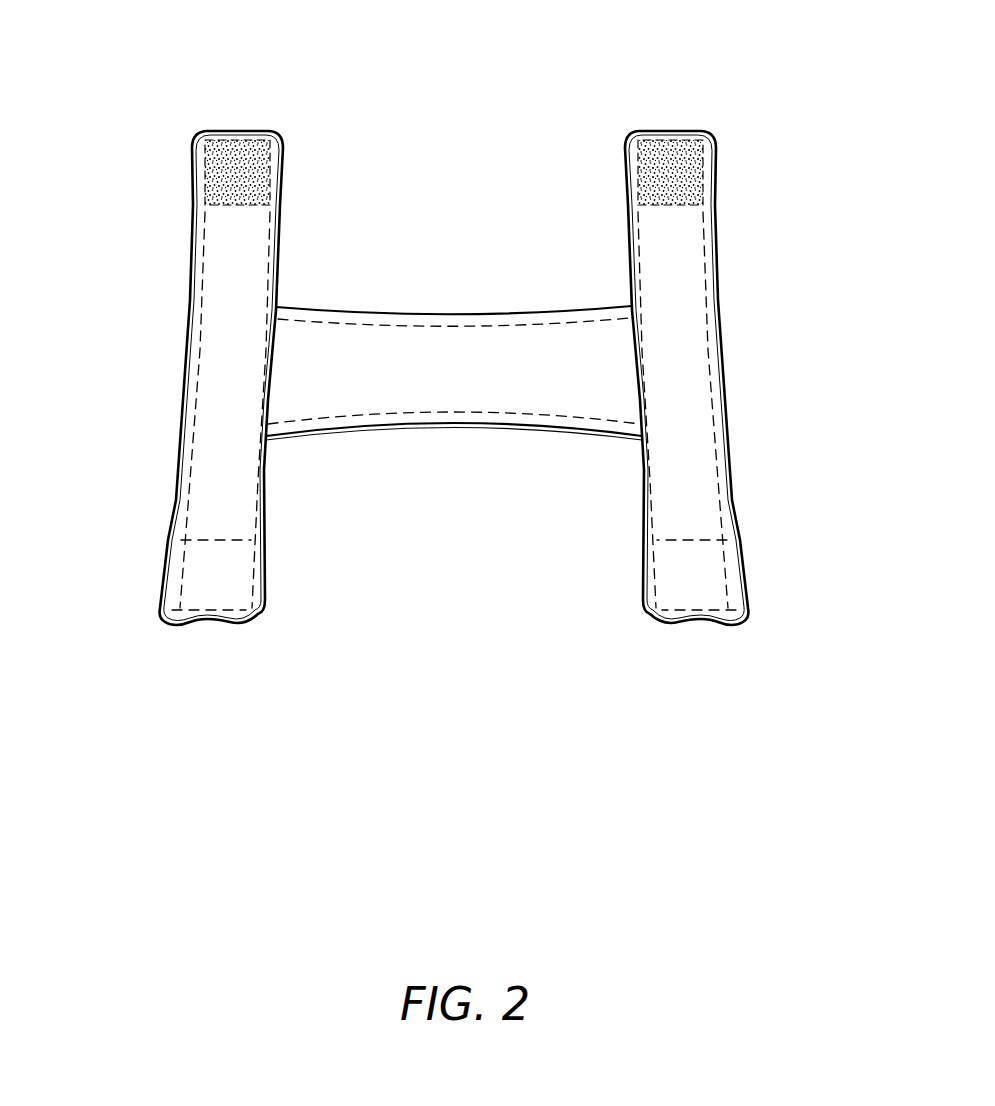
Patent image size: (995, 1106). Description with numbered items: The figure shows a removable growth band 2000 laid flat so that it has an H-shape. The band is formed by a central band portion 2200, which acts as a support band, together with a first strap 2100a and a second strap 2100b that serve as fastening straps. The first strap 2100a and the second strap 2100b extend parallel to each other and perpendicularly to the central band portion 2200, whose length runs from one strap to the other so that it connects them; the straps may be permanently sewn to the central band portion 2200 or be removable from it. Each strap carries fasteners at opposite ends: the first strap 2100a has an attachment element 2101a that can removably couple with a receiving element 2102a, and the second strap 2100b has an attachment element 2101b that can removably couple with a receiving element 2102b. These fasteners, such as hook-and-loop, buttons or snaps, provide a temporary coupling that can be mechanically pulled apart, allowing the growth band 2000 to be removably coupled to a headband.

The removable growth band 2000 is at (153, 66).
The first strap 2100a is at (202, 392).
The second strap 2100b is at (706, 392).
The attachment element 2101a is at (236, 150).
The attachment element 2101b is at (672, 150).
The receiving element 2102a is at (213, 588).
The receiving element 2102b is at (697, 590).
The central band portion 2200 is at (440, 385).